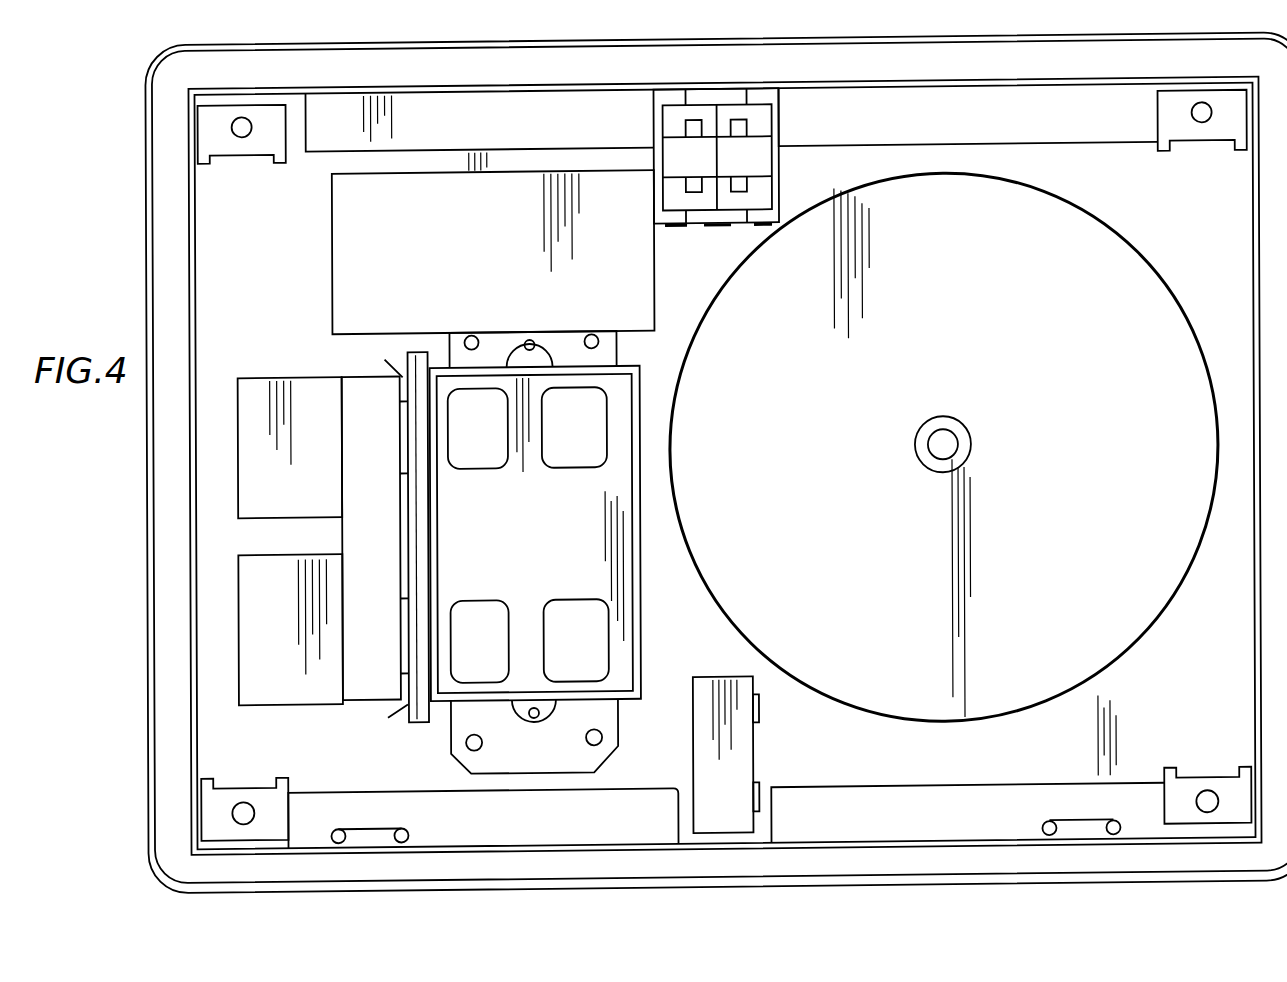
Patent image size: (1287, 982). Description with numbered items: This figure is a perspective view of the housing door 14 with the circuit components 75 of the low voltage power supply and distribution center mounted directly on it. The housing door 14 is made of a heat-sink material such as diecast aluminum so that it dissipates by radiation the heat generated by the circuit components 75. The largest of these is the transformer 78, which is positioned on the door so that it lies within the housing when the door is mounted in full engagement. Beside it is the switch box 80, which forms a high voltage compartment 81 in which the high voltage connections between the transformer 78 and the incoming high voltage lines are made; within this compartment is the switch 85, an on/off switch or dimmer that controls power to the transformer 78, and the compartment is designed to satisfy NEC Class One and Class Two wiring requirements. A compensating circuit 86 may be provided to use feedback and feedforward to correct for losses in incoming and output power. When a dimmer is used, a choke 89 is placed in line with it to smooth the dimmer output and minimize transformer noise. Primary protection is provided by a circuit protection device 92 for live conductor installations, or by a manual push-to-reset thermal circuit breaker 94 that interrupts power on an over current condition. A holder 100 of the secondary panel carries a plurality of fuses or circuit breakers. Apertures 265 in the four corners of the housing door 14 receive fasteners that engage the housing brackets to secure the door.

The housing door 14 is at (462, 887).
The circuit components 75 is at (228, 543).
The transformer 78 is at (1050, 523).
The switch box 80 is at (562, 533).
The high voltage compartment 81 is at (535, 533).
The switch 85 is at (491, 437).
The compensating circuit 86 is at (587, 437).
The choke 89 is at (500, 262).
The circuit protection device 92 is at (492, 652).
The thermal circuit breaker 94 is at (587, 652).
The holder 100 is at (419, 719).
The apertures 265 is at (233, 120).